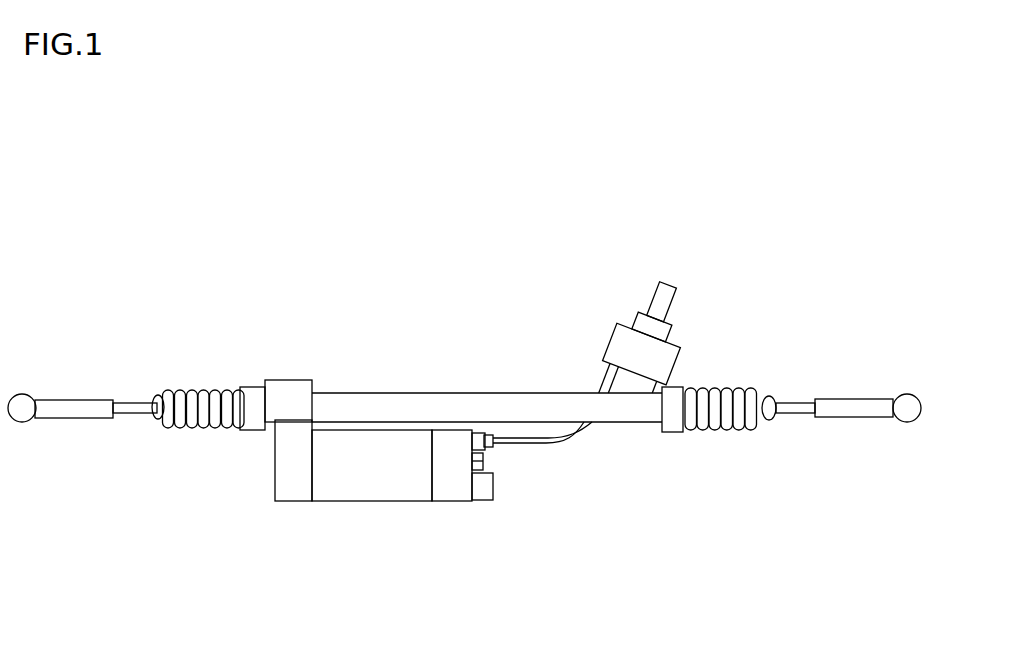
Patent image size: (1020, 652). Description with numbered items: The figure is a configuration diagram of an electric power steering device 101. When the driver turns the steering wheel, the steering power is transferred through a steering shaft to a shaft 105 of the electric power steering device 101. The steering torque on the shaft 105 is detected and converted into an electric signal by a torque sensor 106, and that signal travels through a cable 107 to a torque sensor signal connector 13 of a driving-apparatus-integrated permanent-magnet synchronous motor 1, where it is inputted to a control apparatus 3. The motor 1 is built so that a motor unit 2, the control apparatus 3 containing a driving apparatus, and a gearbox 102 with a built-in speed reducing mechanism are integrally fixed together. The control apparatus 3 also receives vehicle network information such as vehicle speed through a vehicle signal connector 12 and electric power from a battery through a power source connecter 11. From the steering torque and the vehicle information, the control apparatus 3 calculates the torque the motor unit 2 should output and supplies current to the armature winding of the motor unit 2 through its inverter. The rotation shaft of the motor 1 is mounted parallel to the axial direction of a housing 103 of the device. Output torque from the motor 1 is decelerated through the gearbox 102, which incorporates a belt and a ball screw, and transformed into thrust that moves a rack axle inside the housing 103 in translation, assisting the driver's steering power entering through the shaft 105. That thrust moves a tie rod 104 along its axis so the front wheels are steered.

The electric power steering device 101 is at (322, 350).
The driving-apparatus-integrated permanent-magnet synchronous motor 1 is at (457, 567).
The motor unit 2 is at (380, 467).
The control apparatus 3 is at (453, 470).
The power source connecter 11 is at (477, 492).
The vehicle signal connector 12 is at (485, 465).
The torque sensor signal connector 13 is at (493, 445).
The gearbox 102 is at (298, 478).
The housing 103 is at (407, 398).
The tie rod 104 is at (62, 410).
The shaft 105 is at (667, 292).
The torque sensor 106 is at (667, 358).
The cable 107 is at (603, 370).